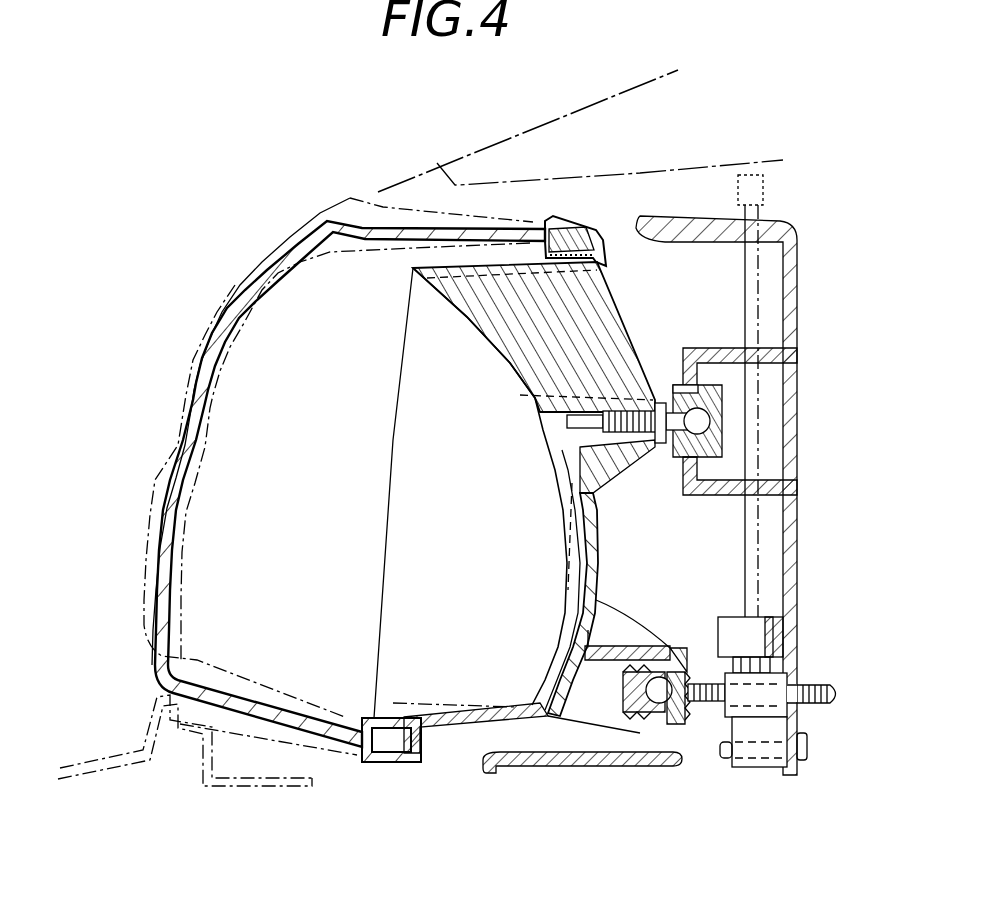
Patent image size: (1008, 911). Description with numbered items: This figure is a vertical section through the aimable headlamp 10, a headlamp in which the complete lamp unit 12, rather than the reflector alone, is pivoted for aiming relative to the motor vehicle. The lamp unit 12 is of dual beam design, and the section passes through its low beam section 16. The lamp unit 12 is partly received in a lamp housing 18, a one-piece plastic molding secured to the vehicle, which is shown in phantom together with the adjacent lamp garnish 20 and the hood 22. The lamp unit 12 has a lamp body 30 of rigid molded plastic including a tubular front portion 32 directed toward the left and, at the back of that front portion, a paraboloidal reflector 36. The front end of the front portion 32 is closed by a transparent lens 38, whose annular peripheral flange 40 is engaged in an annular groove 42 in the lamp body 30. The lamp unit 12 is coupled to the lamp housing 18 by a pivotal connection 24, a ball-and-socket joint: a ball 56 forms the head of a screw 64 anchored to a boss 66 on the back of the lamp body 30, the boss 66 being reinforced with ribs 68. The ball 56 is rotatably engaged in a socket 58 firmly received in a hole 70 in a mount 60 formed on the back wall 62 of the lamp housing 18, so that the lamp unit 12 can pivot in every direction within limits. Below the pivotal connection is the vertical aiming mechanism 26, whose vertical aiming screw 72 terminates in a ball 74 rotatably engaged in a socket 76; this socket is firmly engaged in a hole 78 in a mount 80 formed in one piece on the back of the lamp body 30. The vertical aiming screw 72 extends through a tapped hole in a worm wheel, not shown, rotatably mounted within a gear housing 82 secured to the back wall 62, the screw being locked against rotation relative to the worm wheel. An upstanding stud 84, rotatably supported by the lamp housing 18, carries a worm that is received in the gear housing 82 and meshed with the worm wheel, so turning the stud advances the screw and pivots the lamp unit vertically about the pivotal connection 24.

The aimable headlamp 10 is at (319, 189).
The lamp unit 12 is at (283, 250).
The low beam section 16 is at (238, 404).
The lamp housing 18 is at (532, 768).
The lamp garnish 20 is at (115, 754).
The hood 22 is at (473, 140).
The pivotal connection 24 is at (768, 446).
The vertical aiming mechanism 26 is at (812, 666).
The lamp body 30 is at (609, 254).
The tubular front portion 32 is at (447, 728).
The paraboloidal reflector 36 is at (580, 505).
The lens 38 is at (163, 493).
The annular peripheral flange 40 is at (270, 718).
The annular groove 42 is at (397, 763).
The ball 56 is at (712, 420).
The socket 58 is at (722, 400).
The mount 60 is at (718, 349).
The back wall 62 is at (798, 268).
The screw 64 is at (662, 402).
The boss 66 is at (615, 440).
The ribs 68 is at (540, 345).
The hole 70 is at (720, 392).
The vertical aiming screw 72 is at (818, 706).
The ball 74 is at (633, 713).
The socket 76 is at (685, 724).
The hole 78 is at (622, 677).
The mount 80 is at (627, 646).
The gear housing 82 is at (728, 618).
The upstanding stud 84 is at (760, 212).